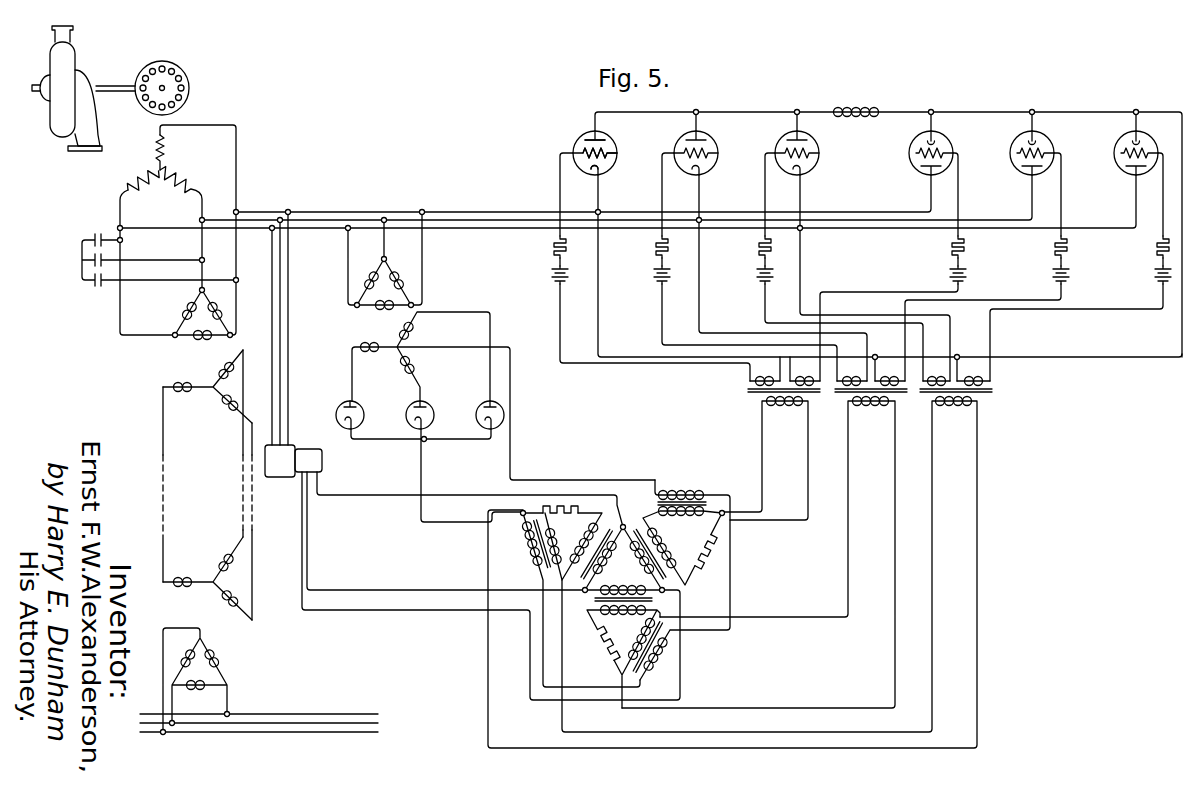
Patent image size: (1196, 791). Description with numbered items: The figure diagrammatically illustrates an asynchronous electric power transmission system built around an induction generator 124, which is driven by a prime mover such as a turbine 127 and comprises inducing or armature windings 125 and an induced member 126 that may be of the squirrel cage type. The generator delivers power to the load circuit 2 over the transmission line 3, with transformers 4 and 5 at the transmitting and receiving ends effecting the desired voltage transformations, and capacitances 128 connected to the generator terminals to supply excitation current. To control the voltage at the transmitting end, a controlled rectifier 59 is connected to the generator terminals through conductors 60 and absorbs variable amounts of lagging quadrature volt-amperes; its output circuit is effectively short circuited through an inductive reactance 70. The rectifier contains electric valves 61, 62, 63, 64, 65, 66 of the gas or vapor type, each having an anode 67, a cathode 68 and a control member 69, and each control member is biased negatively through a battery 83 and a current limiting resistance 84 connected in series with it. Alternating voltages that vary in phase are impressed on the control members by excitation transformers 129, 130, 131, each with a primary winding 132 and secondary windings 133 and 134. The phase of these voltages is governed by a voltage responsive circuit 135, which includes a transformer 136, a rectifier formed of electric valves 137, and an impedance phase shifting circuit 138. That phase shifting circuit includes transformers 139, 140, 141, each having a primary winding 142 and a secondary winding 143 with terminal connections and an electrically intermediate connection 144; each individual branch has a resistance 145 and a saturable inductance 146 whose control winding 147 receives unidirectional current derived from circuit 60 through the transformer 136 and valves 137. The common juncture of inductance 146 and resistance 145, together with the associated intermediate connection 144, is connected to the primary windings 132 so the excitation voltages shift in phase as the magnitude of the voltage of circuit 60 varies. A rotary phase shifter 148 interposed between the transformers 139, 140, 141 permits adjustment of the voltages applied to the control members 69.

The alternating current circuit 2 is at (327, 726).
The alternating current transmission line 3 is at (163, 497).
The transformer 4 is at (203, 370).
The transformer 5 is at (209, 620).
The controlled rectifier 59 is at (875, 191).
The conductors 60 is at (484, 208).
The electric valve 61 is at (611, 141).
The electric valve 62 is at (952, 141).
The electric valve 63 is at (713, 141).
The electric valve 64 is at (1052, 141).
The electric valve 65 is at (813, 141).
The electric valve 66 is at (1157, 141).
The anode 67 is at (582, 138).
The cathode 68 is at (589, 170).
The control member 69 is at (617, 154).
The inductive reactance 70 is at (864, 107).
The battery 83 is at (551, 277).
The current limiting resistance 84 is at (553, 247).
The induction generator 124 is at (226, 113).
The armature windings 125 is at (165, 153).
The induced member 126 is at (189, 80).
The turbine 127 is at (77, 58).
The capacitances 128 is at (80, 255).
The transformer 129 is at (758, 394).
The transformer 130 is at (846, 394).
The transformer 131 is at (930, 394).
The primary winding 132 is at (789, 408).
The secondary winding 133 is at (746, 382).
The secondary winding 134 is at (890, 372).
The voltage responsive circuit 135 is at (562, 447).
The transformer 136 is at (382, 333).
The electric valves 137 is at (360, 405).
The impedance phase shifting circuit 138 is at (764, 593).
The transformer 139 is at (623, 527).
The transformer 140 is at (685, 585).
The transformer 141 is at (645, 601).
The primary winding 142 is at (625, 586).
The secondary winding 143 is at (675, 545).
The electrically intermediate connection 144 is at (562, 546).
The resistance 145 is at (546, 508).
The saturable inductance 146 is at (483, 531).
The control winding 147 is at (528, 566).
The rotary phase shifter 148 is at (294, 446).